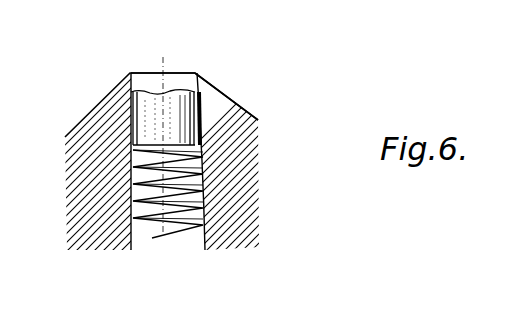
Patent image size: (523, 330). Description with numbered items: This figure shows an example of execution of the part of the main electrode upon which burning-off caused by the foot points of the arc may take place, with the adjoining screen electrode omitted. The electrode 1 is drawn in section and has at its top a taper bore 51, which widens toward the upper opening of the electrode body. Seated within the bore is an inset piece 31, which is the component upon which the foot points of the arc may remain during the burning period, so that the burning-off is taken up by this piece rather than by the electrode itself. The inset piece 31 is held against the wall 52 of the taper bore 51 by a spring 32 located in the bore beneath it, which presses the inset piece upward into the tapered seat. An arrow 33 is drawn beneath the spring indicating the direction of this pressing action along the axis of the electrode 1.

The electrode 1 is at (240, 136).
The inset piece 31 is at (212, 84).
The spring 32 is at (149, 220).
The direction of insertion arrow 33 is at (167, 237).
The taper bore 51 is at (168, 82).
The wall 52 is at (130, 113).